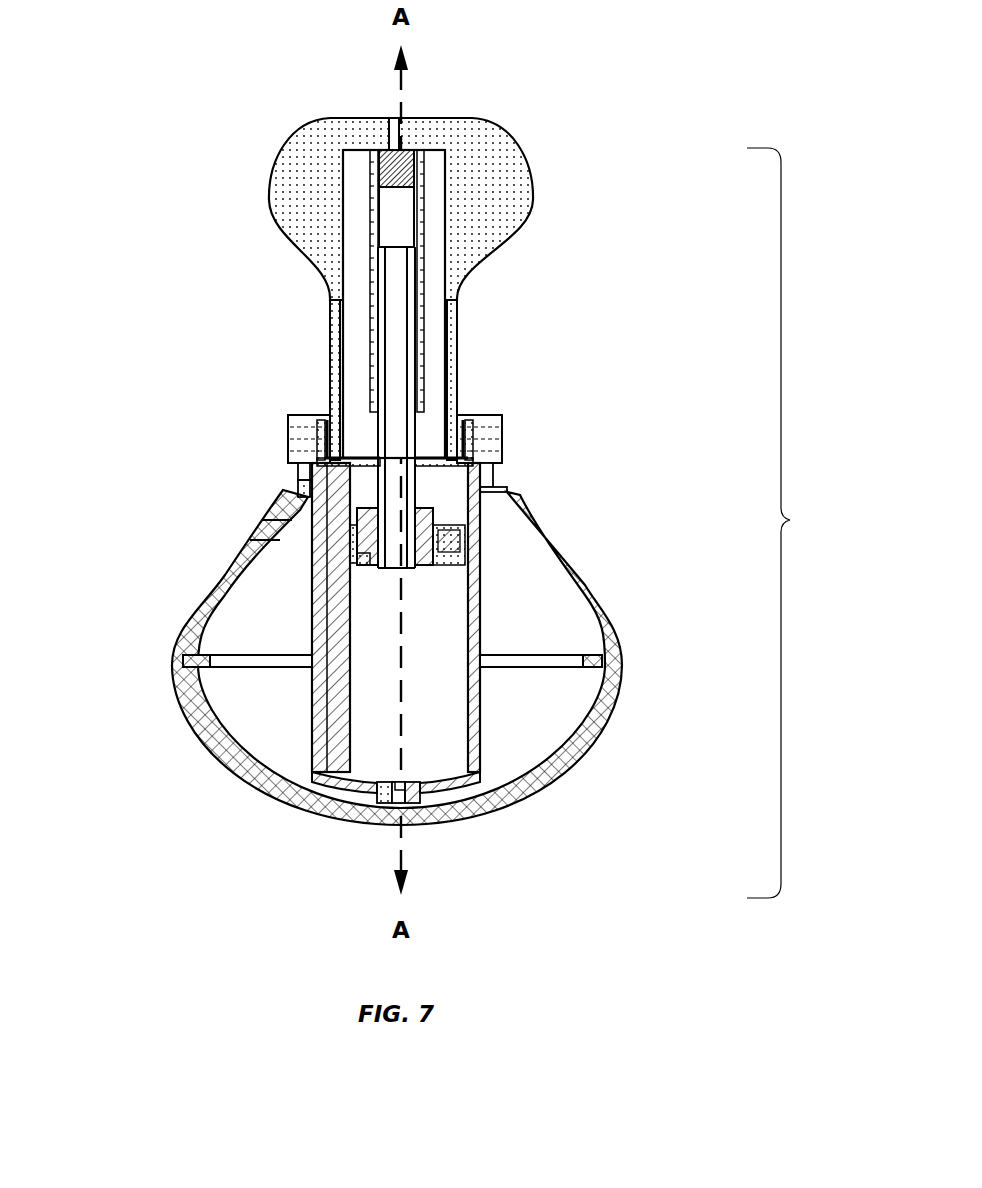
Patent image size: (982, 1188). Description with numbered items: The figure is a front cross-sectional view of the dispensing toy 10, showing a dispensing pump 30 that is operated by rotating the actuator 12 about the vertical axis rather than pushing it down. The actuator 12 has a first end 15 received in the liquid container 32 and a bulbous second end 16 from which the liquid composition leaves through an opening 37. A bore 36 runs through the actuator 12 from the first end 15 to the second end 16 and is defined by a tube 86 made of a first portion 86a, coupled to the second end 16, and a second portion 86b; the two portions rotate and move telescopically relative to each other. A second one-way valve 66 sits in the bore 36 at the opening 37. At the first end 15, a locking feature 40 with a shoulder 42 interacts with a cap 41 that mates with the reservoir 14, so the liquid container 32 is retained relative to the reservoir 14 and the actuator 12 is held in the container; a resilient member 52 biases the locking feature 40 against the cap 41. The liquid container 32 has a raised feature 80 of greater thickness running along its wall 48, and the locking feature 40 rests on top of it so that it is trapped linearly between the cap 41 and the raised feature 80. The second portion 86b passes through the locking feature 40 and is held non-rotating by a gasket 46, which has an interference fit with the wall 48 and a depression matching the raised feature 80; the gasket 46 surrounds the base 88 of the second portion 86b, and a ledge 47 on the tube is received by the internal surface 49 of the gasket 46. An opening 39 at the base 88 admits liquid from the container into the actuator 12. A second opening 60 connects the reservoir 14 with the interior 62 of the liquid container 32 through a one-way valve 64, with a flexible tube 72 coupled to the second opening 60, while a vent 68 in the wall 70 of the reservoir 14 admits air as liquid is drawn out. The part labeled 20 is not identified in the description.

The dispensing toy 10 is at (216, 88).
The actuator 12 is at (503, 147).
The reservoir 14 is at (172, 656).
The first end 15 is at (472, 420).
The second end 16 is at (550, 172).
The neck 20 is at (330, 346).
The dispensing pump 30 is at (812, 523).
The liquid container 32 is at (482, 746).
The bore 36 is at (416, 282).
The opening 37 is at (390, 118).
The opening 39 is at (411, 574).
The locking feature 40 is at (500, 491).
The cap 41 is at (300, 415).
The shoulder 42 is at (318, 441).
The gasket 46 is at (461, 556).
The ledge 47 is at (459, 541).
The wall 48 is at (482, 703).
The internal surface 49 is at (300, 488).
The resilient member 52 is at (372, 728).
The second opening 60 is at (430, 804).
The interior 62 is at (432, 697).
The one-way valve 64 is at (393, 798).
The second one-way valve 66 is at (408, 150).
The vent 68 is at (265, 518).
The wall 70 is at (192, 598).
The flexible tube 72 is at (374, 794).
The raised feature 80 is at (337, 661).
The tube 86 is at (372, 296).
The first portion 86a is at (372, 221).
The second portion 86b is at (421, 342).
The base 88 is at (365, 573).